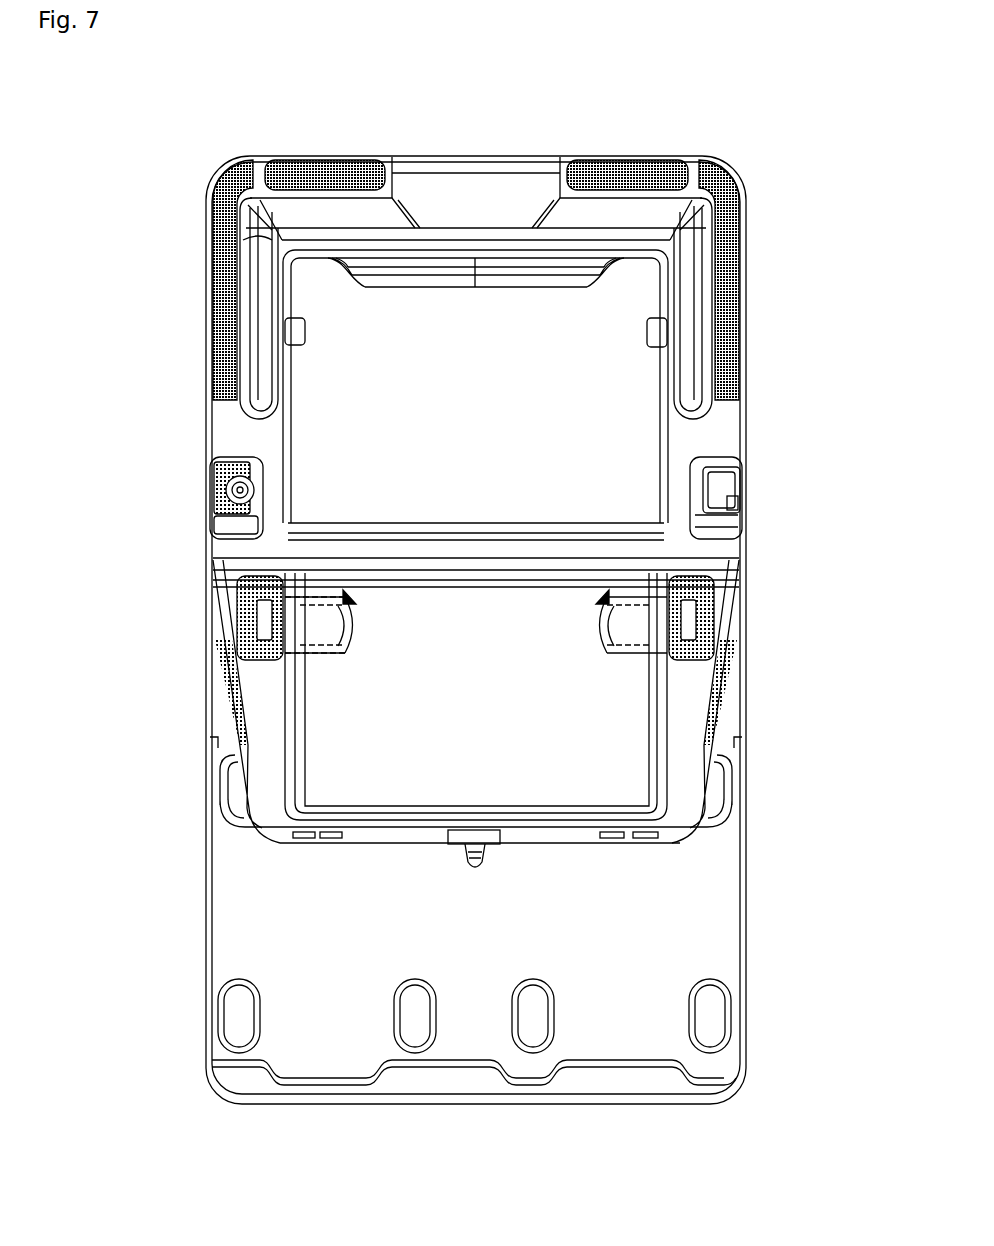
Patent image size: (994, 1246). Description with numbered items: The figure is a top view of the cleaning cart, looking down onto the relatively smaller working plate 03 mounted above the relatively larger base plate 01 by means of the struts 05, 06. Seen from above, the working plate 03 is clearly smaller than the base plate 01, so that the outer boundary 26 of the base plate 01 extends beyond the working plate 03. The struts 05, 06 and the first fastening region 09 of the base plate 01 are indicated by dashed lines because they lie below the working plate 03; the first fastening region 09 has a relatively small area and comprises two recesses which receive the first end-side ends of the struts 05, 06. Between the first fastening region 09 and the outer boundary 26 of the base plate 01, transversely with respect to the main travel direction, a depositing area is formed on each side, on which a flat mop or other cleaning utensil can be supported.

The base plate 01 is at (683, 918).
The working plate 03 is at (687, 733).
The strut 05 is at (607, 600).
The strut 06 is at (347, 597).
The first fastening region 09 is at (244, 600).
The outer boundary 26 is at (302, 568).